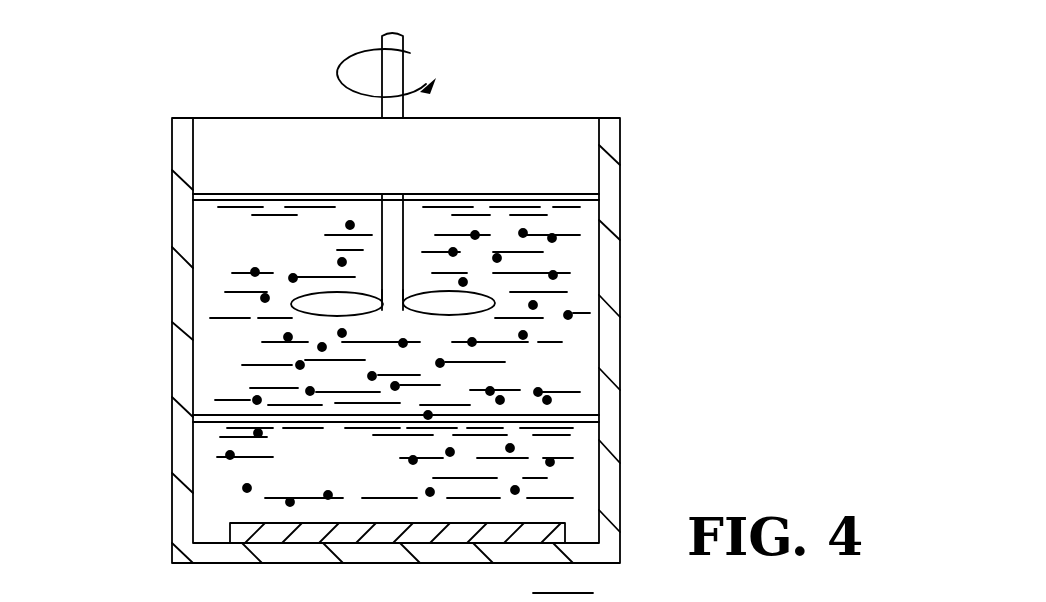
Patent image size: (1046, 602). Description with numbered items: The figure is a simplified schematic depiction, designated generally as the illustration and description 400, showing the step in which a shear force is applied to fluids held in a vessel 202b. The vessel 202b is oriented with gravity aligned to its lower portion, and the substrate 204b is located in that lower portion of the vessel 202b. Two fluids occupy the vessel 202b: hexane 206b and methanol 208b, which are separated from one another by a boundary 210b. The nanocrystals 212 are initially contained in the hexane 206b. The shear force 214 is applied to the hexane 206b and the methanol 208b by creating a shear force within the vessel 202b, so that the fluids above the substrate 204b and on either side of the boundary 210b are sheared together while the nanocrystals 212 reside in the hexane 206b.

The illustration and description 400 is at (606, 85).
The vessel 202b is at (621, 267).
The shear force 214 is at (403, 52).
The hexane 206b is at (303, 257).
The nanocrystals 212 is at (257, 348).
The boundary 210b is at (573, 413).
The methanol 208b is at (380, 473).
The substrate 204b is at (242, 522).